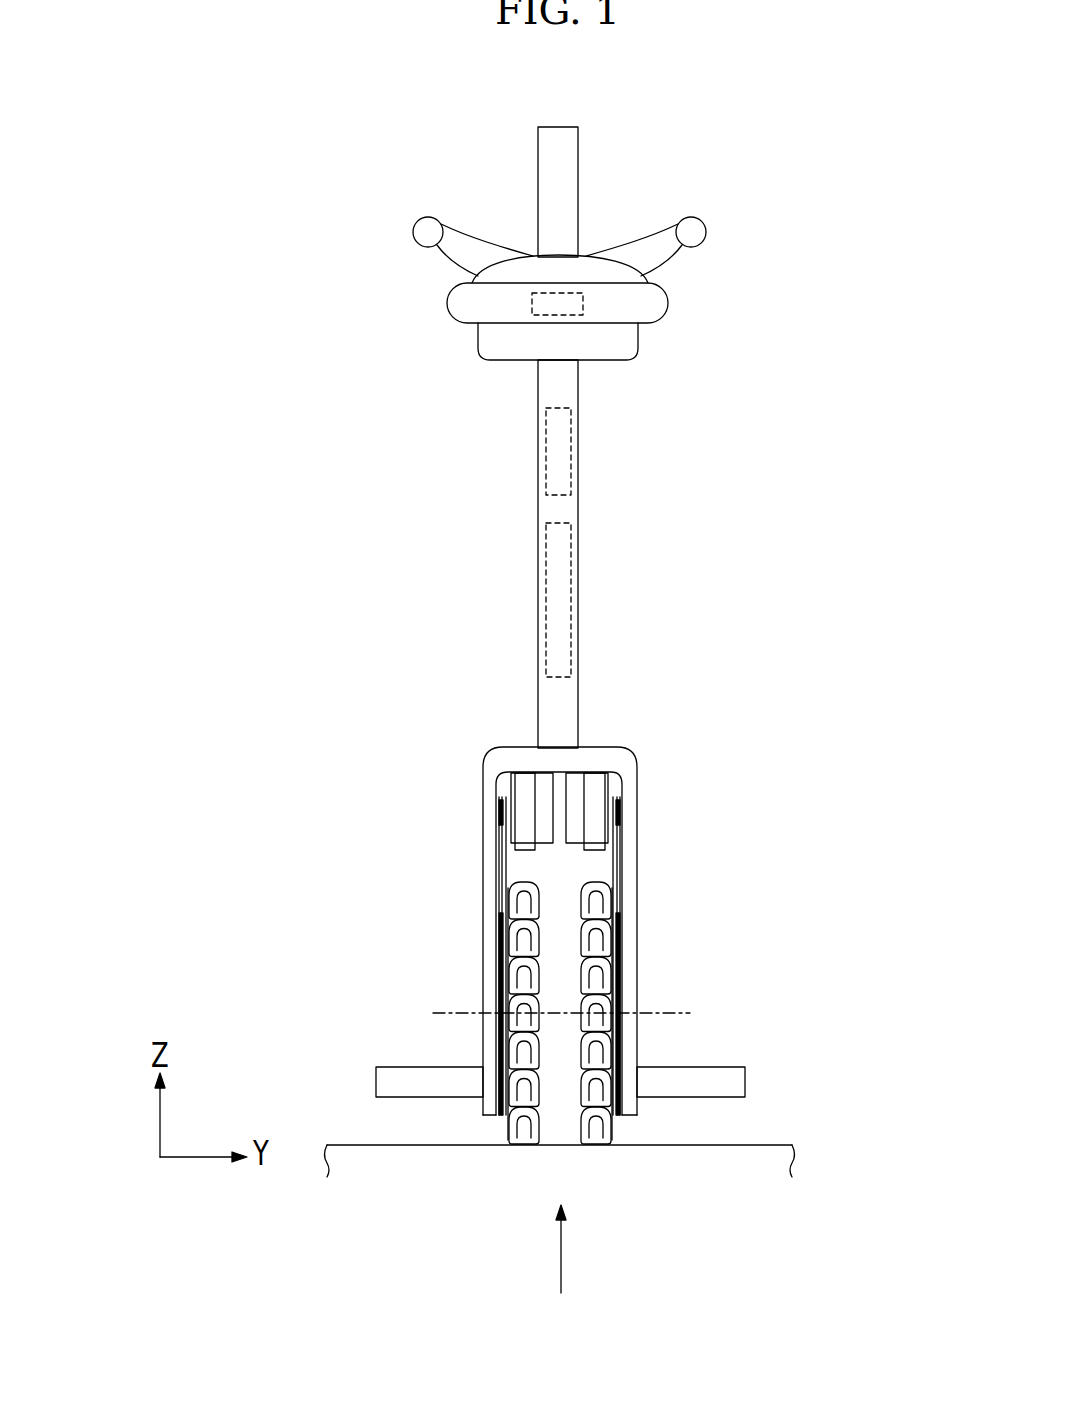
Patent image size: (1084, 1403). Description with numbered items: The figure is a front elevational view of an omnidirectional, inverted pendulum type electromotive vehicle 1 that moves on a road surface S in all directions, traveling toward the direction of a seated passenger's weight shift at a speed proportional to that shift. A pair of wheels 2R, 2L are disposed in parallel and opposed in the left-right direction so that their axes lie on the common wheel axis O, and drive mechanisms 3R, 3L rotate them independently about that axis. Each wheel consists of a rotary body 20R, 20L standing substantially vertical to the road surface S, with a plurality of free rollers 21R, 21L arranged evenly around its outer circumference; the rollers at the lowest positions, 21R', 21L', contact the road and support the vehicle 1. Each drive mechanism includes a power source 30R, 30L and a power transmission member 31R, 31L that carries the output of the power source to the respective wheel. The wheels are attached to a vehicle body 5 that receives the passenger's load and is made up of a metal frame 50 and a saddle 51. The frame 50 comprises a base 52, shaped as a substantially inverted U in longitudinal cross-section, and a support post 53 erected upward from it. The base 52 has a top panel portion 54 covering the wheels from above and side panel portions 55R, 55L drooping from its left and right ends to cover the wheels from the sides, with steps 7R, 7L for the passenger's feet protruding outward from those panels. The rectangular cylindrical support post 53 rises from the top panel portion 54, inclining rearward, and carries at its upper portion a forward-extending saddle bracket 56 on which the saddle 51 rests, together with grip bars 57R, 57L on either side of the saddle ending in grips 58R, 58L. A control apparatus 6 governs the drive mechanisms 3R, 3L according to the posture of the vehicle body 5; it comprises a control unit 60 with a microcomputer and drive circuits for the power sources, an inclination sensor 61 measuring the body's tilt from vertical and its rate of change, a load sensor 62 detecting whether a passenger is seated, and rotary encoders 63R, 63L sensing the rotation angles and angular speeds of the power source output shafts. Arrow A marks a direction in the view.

The vehicle 1 is at (340, 143).
The wheel 2R is at (542, 1023).
The wheel 2L is at (578, 1023).
The drive mechanism 3R is at (518, 762).
The drive mechanism 3L is at (600, 762).
The vehicle body 5 is at (648, 758).
The control apparatus 6 is at (321, 363).
The step 7R is at (376, 1082).
The step 7L is at (745, 1068).
The rotary body 20R is at (545, 1147).
The rotary body 20L is at (576, 1147).
The free rollers 21R is at (447, 994).
The free rollers 21L is at (675, 994).
The free roller at lowest position 21R' is at (474, 1164).
The free roller at lowest position 21L' is at (646, 1164).
The power source 30R is at (542, 783).
The power source 30L is at (576, 783).
The power transmission member 31R is at (503, 857).
The power transmission member 31L is at (615, 852).
The frame 50 is at (756, 540).
The saddle 51 is at (588, 253).
The base 52 is at (637, 748).
The support post 53 is at (578, 512).
The top panel portion 54 is at (556, 745).
The side panel portion 55R is at (483, 880).
The side panel portion 55L is at (636, 878).
The saddle bracket 56 is at (640, 338).
The grip bar 57R is at (470, 253).
The grip bar 57L is at (645, 252).
The grip 58R is at (413, 232).
The grip 58L is at (706, 232).
The control unit 60 is at (539, 587).
The inclination sensor 61 is at (539, 456).
The load sensor 62 is at (530, 303).
The rotary encoder 63R is at (505, 780).
The rotary encoder 63L is at (606, 818).
The wheel axis O is at (663, 1010).
The road surface S is at (710, 1145).
The forward direction A is at (562, 1265).